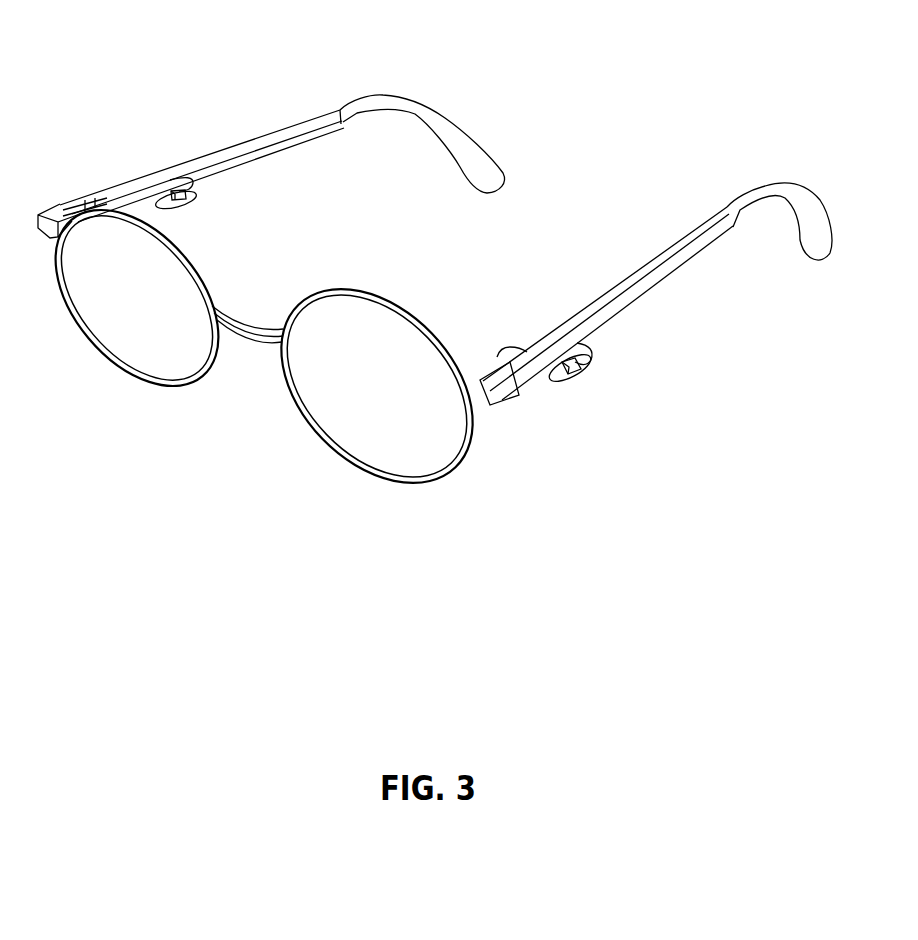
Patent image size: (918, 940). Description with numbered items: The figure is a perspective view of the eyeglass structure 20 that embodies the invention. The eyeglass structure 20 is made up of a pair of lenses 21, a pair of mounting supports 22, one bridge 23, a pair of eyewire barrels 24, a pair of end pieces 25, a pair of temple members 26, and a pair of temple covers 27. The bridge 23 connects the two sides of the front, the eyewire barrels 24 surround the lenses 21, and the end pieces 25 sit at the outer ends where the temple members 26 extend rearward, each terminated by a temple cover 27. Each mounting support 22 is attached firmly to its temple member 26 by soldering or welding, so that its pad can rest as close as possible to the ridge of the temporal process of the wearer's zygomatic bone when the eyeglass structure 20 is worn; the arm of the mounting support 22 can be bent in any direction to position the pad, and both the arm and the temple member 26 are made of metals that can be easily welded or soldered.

The eyeglass structure 20 is at (232, 455).
The lenses 21 is at (125, 298).
The mounting supports 22 is at (197, 203).
The bridge 23 is at (237, 313).
The eyewire barrels 24 is at (140, 381).
The end pieces 25 is at (57, 205).
The temple members 26 is at (230, 148).
The temple covers 27 is at (420, 110).